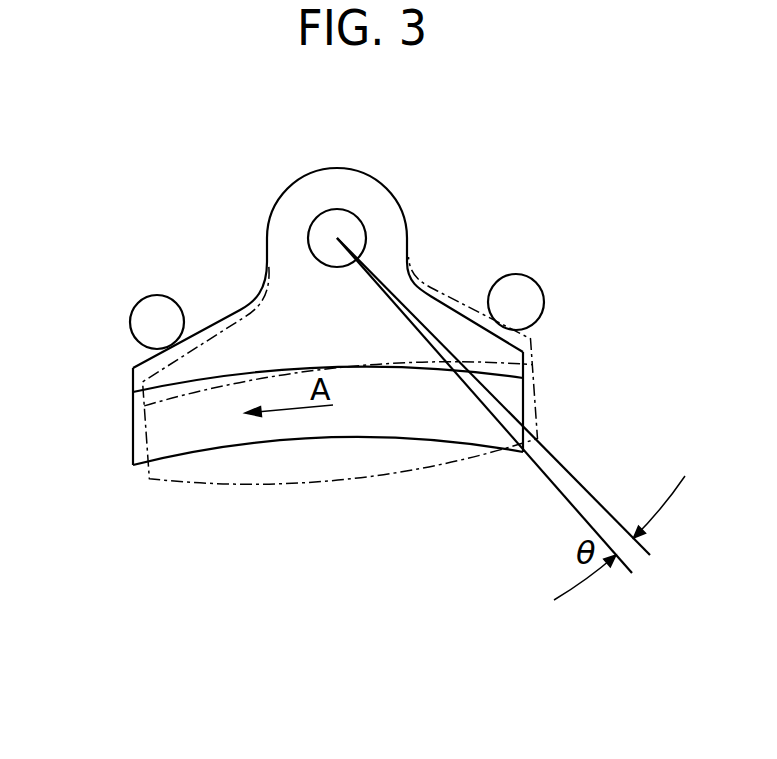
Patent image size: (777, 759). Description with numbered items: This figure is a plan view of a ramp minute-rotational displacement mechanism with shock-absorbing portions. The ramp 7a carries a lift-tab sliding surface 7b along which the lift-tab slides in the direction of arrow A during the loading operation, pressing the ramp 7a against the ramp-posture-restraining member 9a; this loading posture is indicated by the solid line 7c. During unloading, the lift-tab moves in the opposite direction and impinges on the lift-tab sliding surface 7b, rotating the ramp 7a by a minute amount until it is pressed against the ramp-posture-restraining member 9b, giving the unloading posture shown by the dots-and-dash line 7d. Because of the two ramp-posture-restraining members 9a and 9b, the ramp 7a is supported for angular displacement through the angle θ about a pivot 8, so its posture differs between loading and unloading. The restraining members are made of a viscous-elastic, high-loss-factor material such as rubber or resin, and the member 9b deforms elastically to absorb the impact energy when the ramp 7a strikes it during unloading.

The ramp 7a is at (392, 193).
The lift-tab sliding surface 7b is at (367, 417).
The solid line (ramp posture during loading operation) 7c is at (133, 423).
The dots-and-dash line (ramp posture during unloading operation) 7d is at (220, 458).
The pivot pin 8 is at (313, 218).
The ramp-posture-restraining member 9a is at (157, 297).
The ramp-posture-restraining member 9b is at (532, 285).